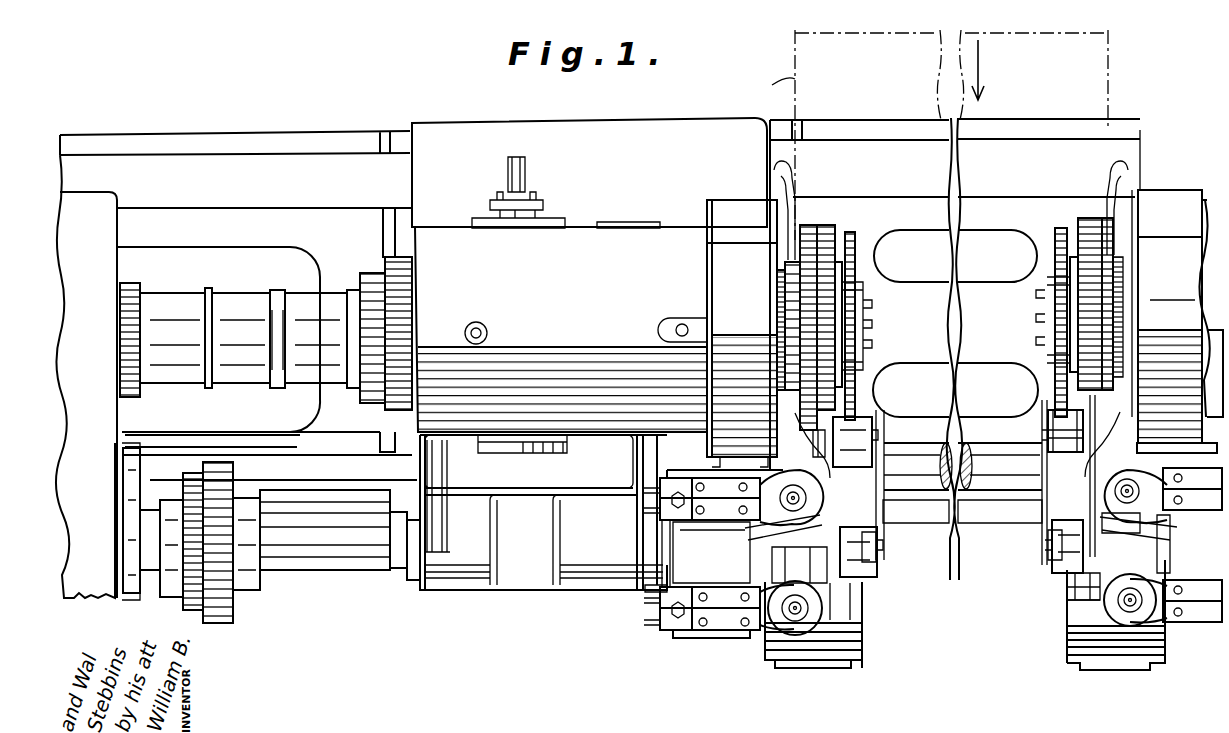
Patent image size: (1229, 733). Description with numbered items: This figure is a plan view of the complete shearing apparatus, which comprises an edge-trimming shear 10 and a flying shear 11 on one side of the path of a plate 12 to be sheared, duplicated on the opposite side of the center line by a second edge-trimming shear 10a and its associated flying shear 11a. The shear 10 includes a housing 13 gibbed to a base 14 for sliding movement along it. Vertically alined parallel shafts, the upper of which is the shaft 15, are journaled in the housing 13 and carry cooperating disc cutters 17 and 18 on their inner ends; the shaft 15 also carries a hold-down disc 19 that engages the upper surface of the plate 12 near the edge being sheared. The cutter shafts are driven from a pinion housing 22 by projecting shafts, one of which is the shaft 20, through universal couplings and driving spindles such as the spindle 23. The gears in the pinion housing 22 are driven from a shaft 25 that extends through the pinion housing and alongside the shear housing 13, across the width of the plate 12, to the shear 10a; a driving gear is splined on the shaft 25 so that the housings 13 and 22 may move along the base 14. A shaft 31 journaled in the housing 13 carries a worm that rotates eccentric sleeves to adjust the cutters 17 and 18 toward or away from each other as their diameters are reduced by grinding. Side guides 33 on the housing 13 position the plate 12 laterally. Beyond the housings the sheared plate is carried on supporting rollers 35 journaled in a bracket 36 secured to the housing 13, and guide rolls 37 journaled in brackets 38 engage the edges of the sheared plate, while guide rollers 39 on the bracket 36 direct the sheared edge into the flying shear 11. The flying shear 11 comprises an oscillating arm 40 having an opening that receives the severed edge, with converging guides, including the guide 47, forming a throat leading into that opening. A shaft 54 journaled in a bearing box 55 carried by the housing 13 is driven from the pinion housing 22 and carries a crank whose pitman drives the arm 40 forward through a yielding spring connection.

The edge-trimming shear 10 is at (600, 245).
The second edge-trimming shear 10a is at (1153, 253).
The flying shear 11 is at (864, 605).
The flying shear associated with second edge-trimming shear 11a is at (1066, 603).
The plate 12 is at (793, 79).
The housing 13 is at (443, 236).
The base 14 is at (327, 138).
The shaft 15 is at (777, 295).
The disc cutter 17 is at (809, 225).
The disc cutter 18 is at (823, 226).
The hold-down disc 19 is at (856, 242).
The shaft 20 is at (147, 320).
The pinion housing 22 is at (81, 220).
The driving spindle 23 is at (281, 306).
The shaft 25 is at (327, 465).
The shaft 31 is at (527, 198).
The side guide 33 is at (781, 168).
The supporting roller 35 is at (848, 536).
The bracket 36 is at (875, 538).
The guide roll 37 is at (795, 512).
The bracket 38 is at (728, 600).
The guide roller 39 is at (964, 377).
The oscillating arm 40 is at (833, 648).
The converging guide 47 is at (821, 543).
The shaft 54 is at (360, 550).
The bearing box 55 is at (585, 572).